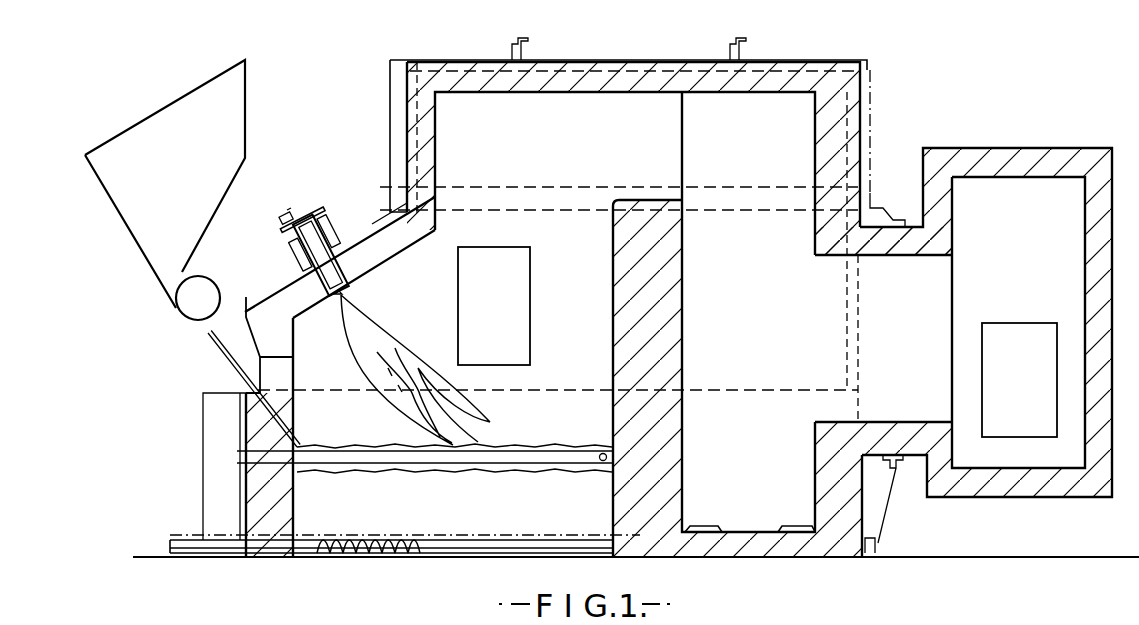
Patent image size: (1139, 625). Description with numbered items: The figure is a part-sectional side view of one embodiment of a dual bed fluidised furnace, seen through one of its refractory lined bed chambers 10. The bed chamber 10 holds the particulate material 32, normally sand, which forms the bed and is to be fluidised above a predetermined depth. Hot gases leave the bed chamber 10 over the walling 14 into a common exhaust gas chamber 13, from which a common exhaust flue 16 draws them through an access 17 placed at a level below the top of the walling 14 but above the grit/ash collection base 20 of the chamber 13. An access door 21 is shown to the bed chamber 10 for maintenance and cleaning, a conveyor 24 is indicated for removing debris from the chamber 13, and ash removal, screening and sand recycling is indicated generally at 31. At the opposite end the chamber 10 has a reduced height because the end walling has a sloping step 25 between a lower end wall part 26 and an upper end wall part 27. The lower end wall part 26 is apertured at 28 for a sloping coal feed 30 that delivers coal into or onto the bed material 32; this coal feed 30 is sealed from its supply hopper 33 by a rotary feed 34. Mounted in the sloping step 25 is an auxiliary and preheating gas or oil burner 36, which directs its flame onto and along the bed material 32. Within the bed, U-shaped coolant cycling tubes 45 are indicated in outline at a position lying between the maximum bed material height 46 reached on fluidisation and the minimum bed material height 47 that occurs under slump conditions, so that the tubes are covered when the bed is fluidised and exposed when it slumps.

The bed chamber 10 is at (419, 342).
The common exhaust gas chamber 13 is at (752, 317).
The walling 14 is at (675, 262).
The common exhaust flue 16 is at (998, 301).
The access 17 is at (888, 318).
The grit/ash collection base 20 is at (785, 528).
The access door 21 is at (520, 257).
The conveyor 24 is at (740, 528).
The sloping step 25 is at (378, 240).
The lower end wall part 26 is at (246, 385).
The upper end wall part 27 is at (410, 130).
The aperture 28 is at (283, 378).
The coal feed 30 is at (230, 347).
The ash removal, screening and sand recycling 31 is at (470, 548).
The particulate material 32 is at (435, 505).
The supply hopper 33 is at (160, 193).
The rotary feed 34 is at (185, 330).
The auxiliary and preheating burner 36 is at (318, 212).
The U-shaped coolant cycling tube 45 is at (376, 464).
The maximum bed material height 46 is at (330, 445).
The minimum bed material height 47 is at (312, 474).